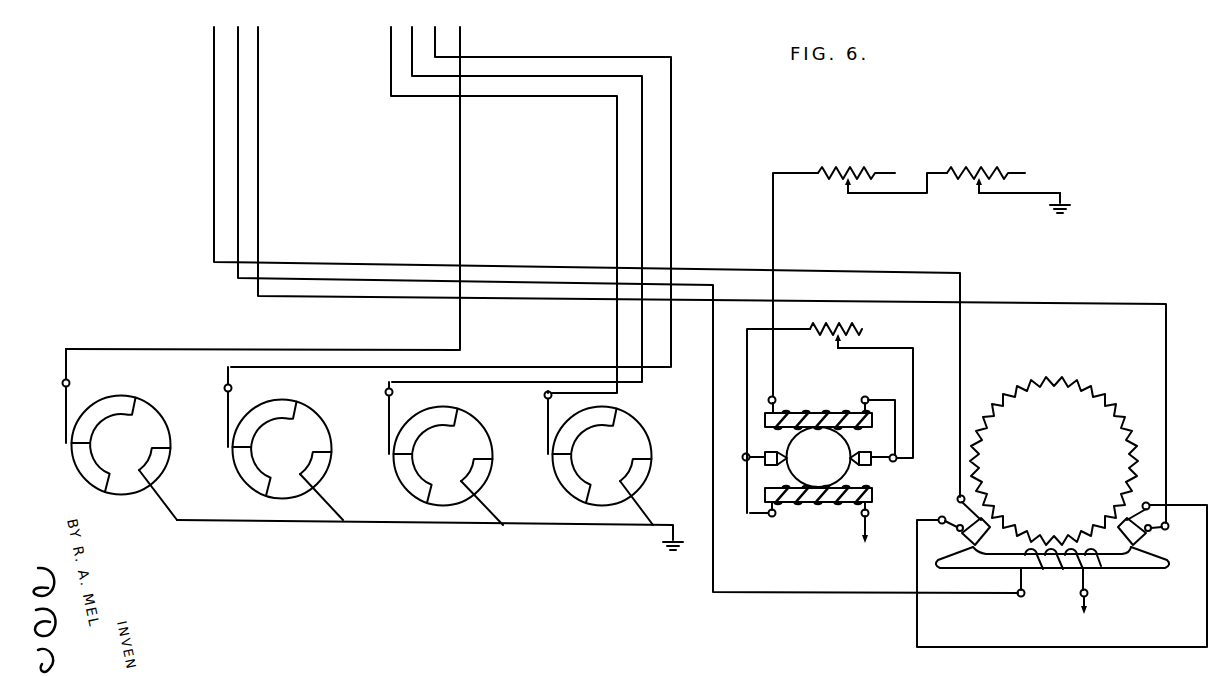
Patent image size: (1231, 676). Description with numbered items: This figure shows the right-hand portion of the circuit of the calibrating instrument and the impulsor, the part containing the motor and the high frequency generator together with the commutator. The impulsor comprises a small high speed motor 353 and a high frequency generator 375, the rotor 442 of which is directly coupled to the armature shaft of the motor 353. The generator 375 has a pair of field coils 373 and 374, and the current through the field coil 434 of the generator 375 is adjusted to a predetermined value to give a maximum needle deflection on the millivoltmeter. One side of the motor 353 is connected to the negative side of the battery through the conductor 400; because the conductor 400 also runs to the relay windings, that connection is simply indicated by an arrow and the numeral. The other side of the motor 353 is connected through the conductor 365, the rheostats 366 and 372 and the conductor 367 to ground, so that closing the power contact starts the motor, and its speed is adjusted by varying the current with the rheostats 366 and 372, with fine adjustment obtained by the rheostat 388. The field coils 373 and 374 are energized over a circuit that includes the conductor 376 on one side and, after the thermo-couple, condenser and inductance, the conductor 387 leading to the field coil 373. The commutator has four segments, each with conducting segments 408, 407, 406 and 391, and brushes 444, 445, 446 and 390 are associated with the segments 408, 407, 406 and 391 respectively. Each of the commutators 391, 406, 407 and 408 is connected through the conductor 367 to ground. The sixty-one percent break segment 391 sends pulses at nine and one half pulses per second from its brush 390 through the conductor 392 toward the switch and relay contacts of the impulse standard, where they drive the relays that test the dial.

The motor 353 is at (814, 522).
The conductor 365 is at (773, 232).
The rheostat 366 is at (830, 170).
The conductor 367 is at (1030, 199).
The rheostat 372 is at (964, 170).
The field coil 373 is at (958, 533).
The field coil 374 is at (1150, 535).
The high frequency generator 375 is at (1062, 481).
The conductor 376 is at (259, 150).
The conductor 387 is at (214, 148).
The rheostat 388 is at (822, 336).
The brush 390 is at (66, 428).
The conducting segment 391 is at (125, 458).
The conductor 392 is at (460, 225).
The conductor 400 is at (973, 575).
The conducting segment 406 is at (288, 460).
The conducting segment 407 is at (449, 466).
The conducting segment 408 is at (603, 466).
The field coil 434 is at (1072, 578).
The rotor 442 is at (1072, 384).
The brush 444 is at (548, 432).
The brush 445 is at (389, 430).
The brush 446 is at (228, 428).